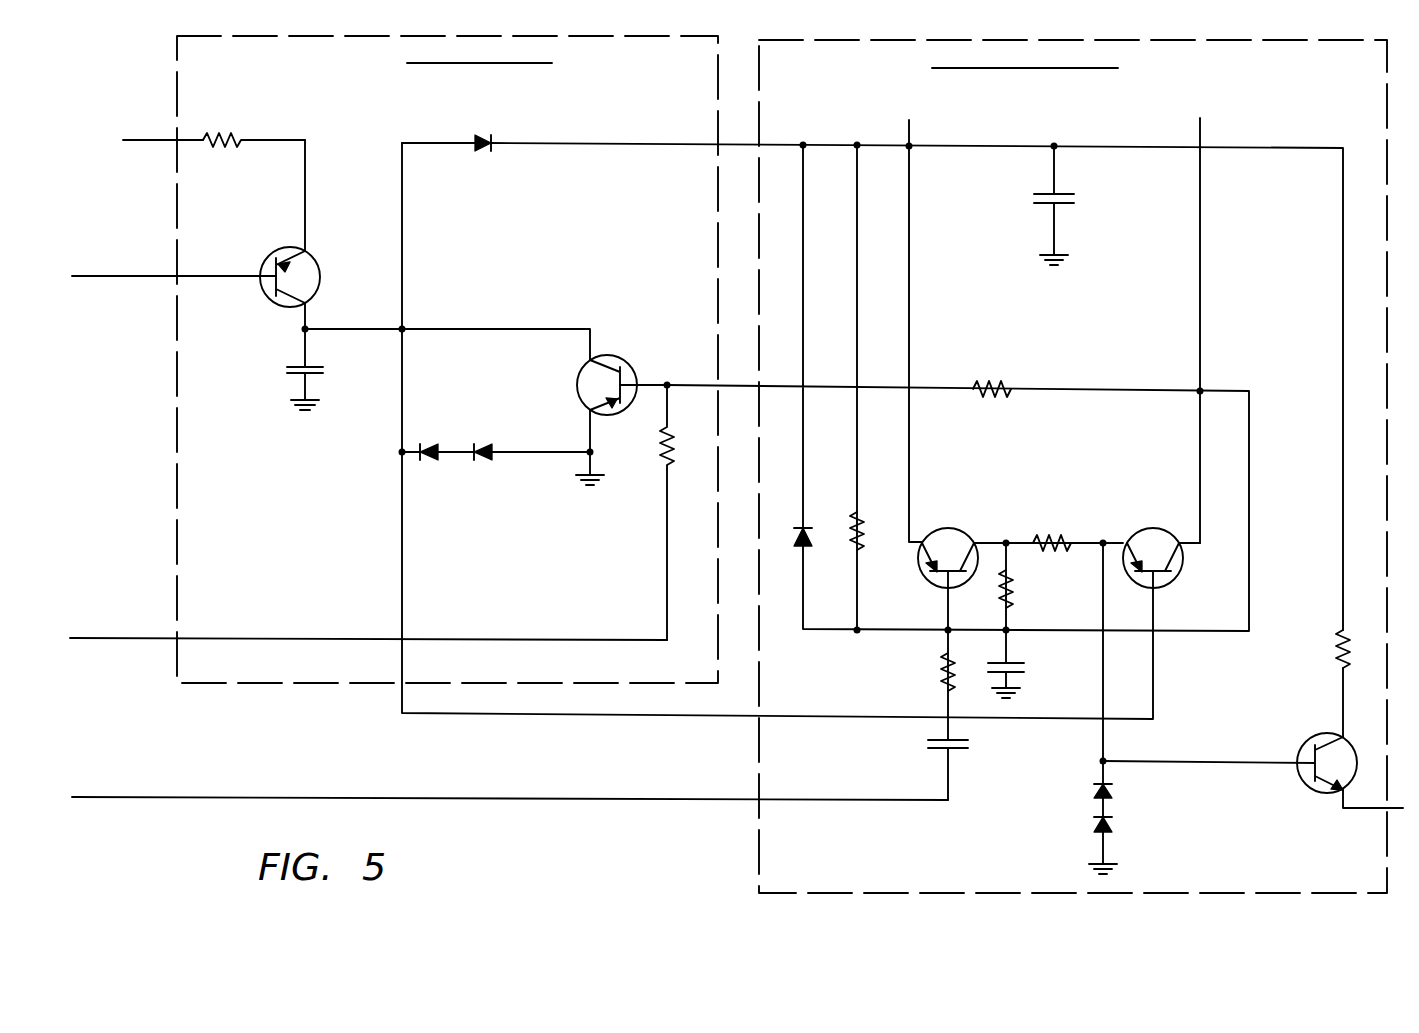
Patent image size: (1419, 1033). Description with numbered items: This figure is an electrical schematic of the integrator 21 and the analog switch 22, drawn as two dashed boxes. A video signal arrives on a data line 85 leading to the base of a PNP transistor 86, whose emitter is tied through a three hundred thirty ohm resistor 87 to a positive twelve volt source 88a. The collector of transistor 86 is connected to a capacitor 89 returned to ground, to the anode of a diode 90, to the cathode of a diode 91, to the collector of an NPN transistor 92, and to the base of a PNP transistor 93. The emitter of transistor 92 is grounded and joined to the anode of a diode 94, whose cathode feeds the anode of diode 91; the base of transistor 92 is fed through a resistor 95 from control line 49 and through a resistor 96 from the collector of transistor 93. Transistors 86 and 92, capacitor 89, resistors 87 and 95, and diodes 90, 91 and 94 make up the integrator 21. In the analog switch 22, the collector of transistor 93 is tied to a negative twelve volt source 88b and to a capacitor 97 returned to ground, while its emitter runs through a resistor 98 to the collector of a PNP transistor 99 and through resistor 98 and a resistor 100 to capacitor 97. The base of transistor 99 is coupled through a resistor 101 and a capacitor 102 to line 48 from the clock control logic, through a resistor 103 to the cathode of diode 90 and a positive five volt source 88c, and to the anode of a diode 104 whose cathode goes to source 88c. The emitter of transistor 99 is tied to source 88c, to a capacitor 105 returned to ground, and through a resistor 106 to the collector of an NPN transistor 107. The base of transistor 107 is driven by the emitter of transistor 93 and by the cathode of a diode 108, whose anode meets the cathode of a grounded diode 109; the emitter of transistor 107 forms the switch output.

The integrator 21 is at (177, 437).
The analog switch 22 is at (759, 831).
The line 48 is at (353, 796).
The control line 49 is at (471, 637).
The data line 85 is at (133, 272).
The PNP transistor 86 is at (312, 269).
The resistor 87 is at (228, 133).
The +12 volt source 88a is at (143, 140).
The −12 volt source 88b is at (1202, 319).
The +5 volt source 88c is at (907, 318).
The capacitor 89 is at (286, 366).
The diode 90 is at (487, 134).
The diode 91 is at (429, 443).
The NPN transistor 92 is at (575, 383).
The PNP transistor 93 is at (1156, 530).
The diode 94 is at (483, 443).
The resistor 95 is at (664, 452).
The resistor 96 is at (991, 385).
The capacitor 97 is at (1018, 673).
The resistor 98 is at (1049, 540).
The PNP transistor 99 is at (952, 529).
The resistor 100 is at (1013, 591).
The resistor 101 is at (944, 670).
The capacitor 102 is at (956, 752).
The resistor 103 is at (858, 556).
The diode 104 is at (809, 528).
The capacitor 105 is at (1063, 195).
The resistor 106 is at (1338, 648).
The NPN transistor 107 is at (1298, 746).
The diode 108 is at (1112, 792).
The diode 109 is at (1112, 827).